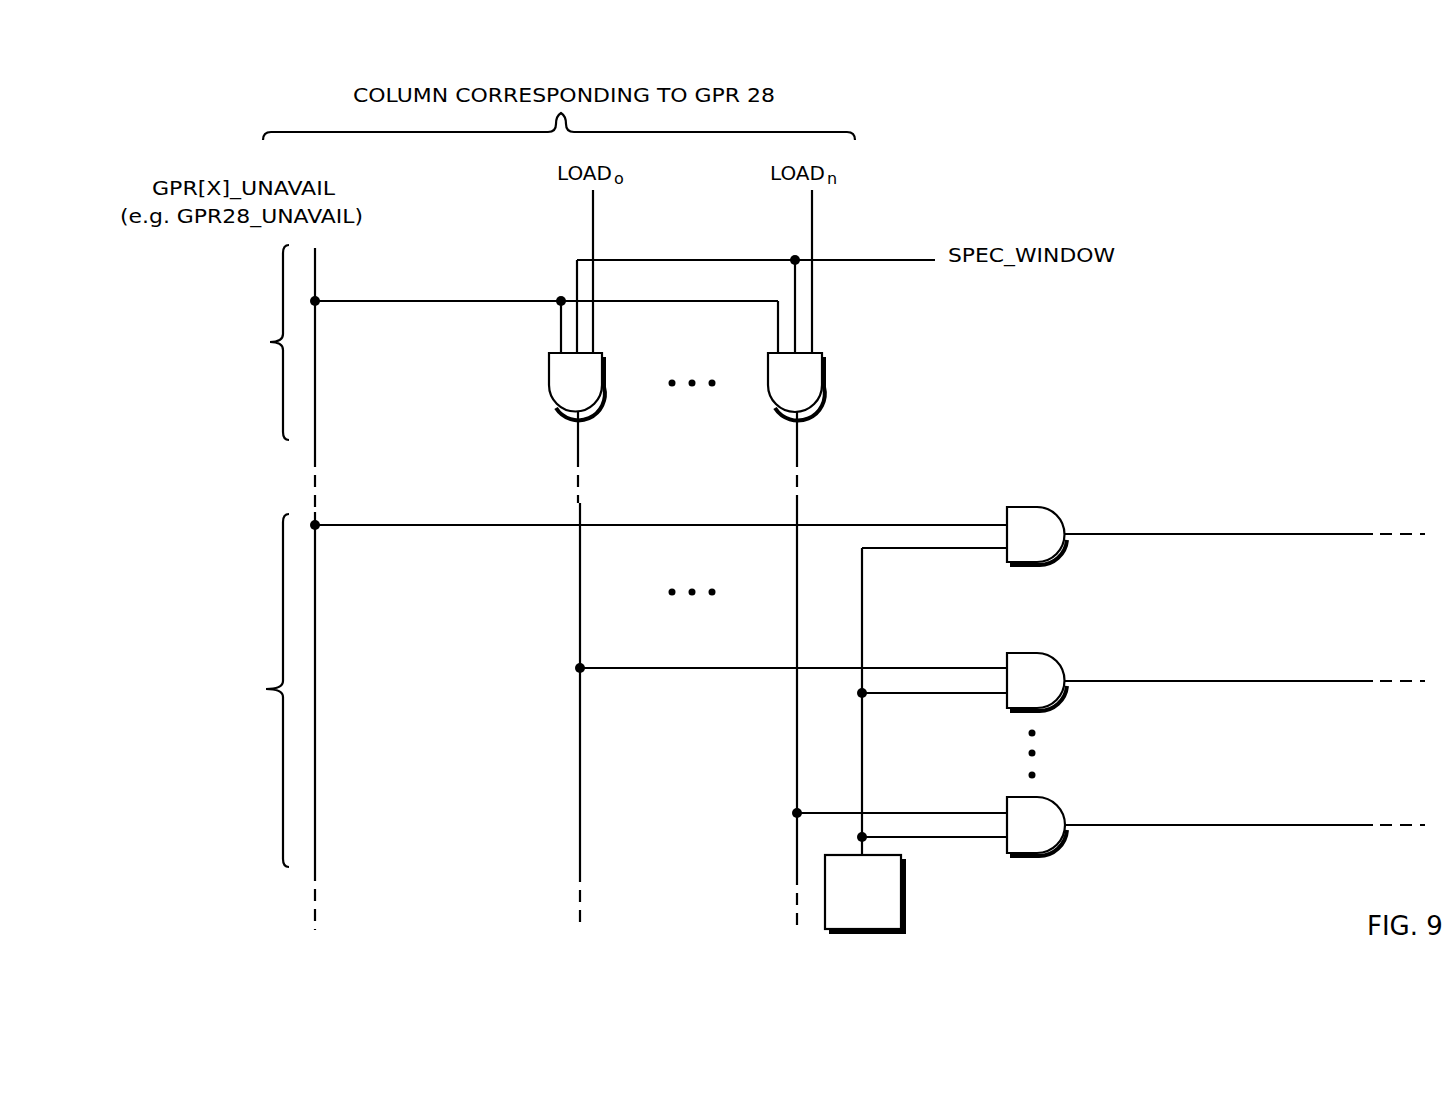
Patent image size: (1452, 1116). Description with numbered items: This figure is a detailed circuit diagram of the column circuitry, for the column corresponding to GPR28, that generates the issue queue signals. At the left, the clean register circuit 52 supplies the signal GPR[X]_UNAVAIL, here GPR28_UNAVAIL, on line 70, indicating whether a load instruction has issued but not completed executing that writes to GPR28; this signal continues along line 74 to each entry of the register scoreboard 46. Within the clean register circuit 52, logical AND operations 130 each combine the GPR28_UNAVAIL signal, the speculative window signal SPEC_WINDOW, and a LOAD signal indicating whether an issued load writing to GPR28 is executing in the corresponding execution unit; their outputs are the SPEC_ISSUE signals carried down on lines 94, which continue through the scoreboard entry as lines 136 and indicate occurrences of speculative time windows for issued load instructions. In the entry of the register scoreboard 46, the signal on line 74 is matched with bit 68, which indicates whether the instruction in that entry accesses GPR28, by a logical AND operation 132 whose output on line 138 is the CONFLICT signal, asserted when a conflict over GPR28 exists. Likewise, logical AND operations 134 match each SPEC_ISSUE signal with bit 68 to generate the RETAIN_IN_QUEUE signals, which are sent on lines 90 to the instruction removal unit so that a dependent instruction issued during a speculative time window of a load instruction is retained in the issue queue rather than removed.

The lines 70 is at (315, 358).
The line 74 is at (315, 697).
The clean register circuit 52 is at (219, 342).
The register scoreboard 46 is at (198, 690).
The logical AND operations 130 is at (602, 368).
The lines 94 is at (578, 437).
The speculative issue lines in scoreboard 136 is at (580, 566).
The logical AND operation 132 is at (1040, 507).
The logical AND operations 134 is at (1036, 653).
The line 138 is at (1333, 534).
The lines 90 is at (1288, 850).
The bit 68 is at (851, 906).